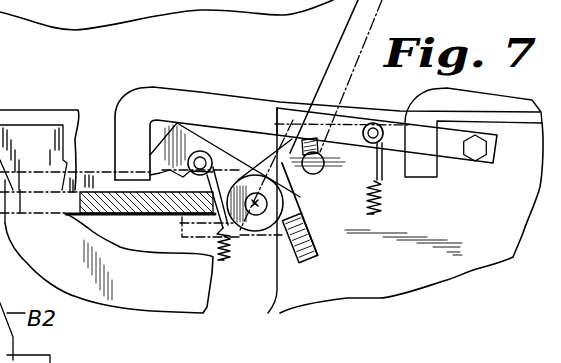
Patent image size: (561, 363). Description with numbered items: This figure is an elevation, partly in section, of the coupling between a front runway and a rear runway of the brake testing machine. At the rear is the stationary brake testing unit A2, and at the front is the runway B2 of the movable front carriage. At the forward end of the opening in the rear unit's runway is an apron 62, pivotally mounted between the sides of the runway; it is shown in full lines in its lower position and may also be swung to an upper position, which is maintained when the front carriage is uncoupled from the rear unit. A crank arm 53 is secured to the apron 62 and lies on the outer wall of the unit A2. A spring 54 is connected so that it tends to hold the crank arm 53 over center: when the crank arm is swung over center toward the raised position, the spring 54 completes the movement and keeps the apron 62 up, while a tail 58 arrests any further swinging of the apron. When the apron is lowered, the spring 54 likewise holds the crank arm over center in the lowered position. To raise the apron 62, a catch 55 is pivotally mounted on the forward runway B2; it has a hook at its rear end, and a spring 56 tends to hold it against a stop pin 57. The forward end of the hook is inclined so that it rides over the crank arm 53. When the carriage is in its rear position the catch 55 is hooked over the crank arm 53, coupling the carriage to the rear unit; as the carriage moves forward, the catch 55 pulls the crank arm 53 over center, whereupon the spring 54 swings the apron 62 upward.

The crank arm 53 is at (217, 142).
The spring 54 is at (227, 262).
The catch 55 is at (213, 110).
The spring 56 is at (381, 202).
The stop pin 57 is at (320, 168).
The tail 58 is at (318, 255).
The apron 62 is at (88, 182).
The brake testing unit A2 is at (122, 279).
The runway B2 is at (505, 233).